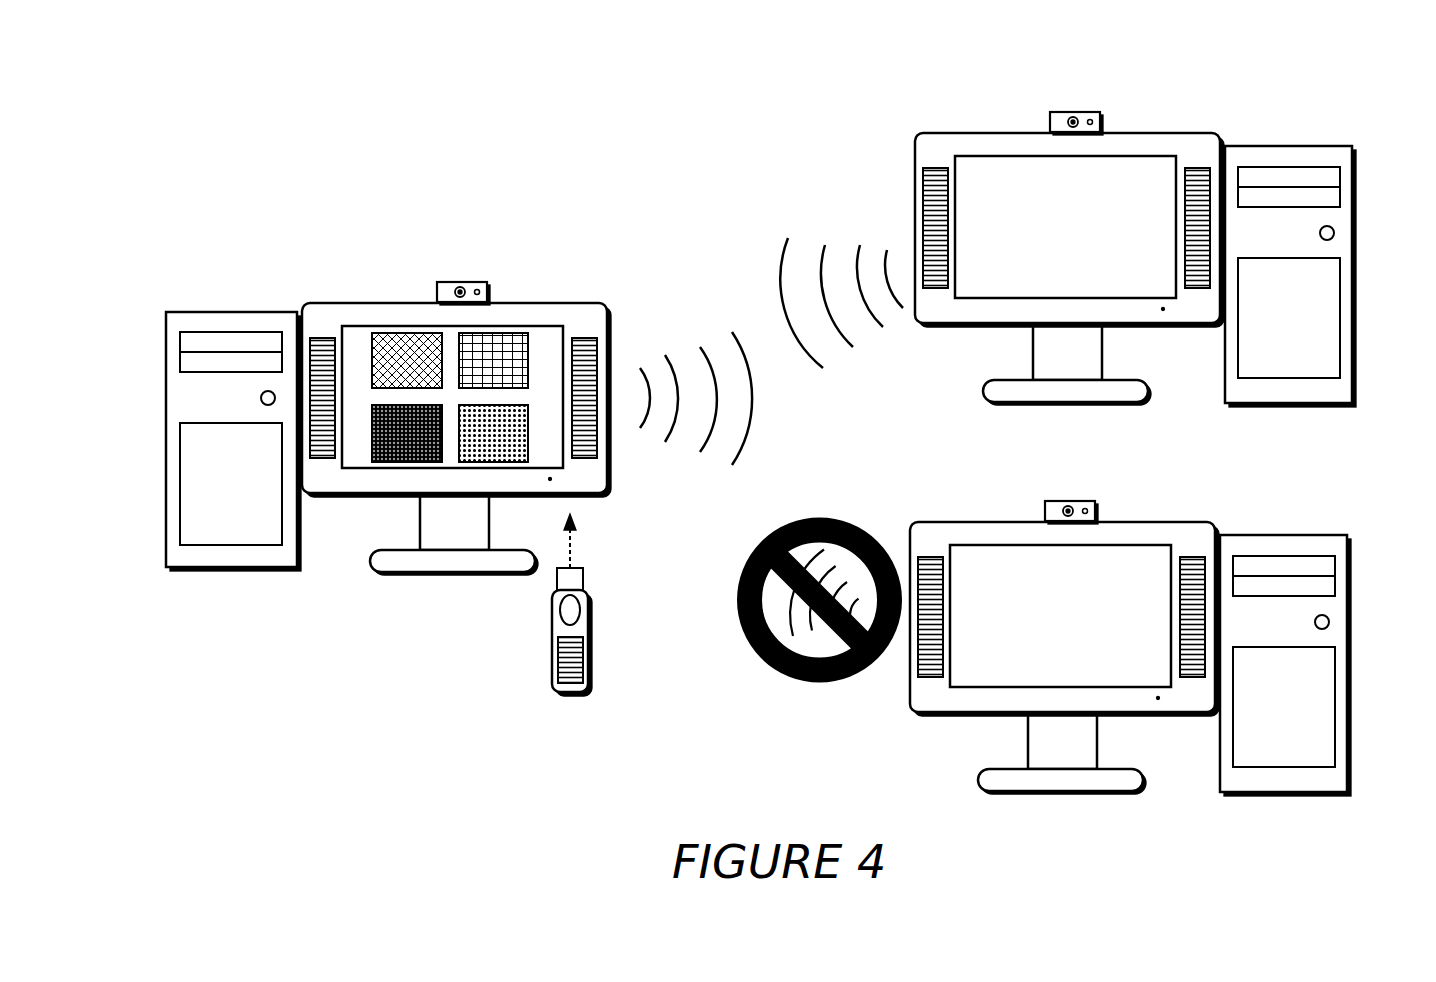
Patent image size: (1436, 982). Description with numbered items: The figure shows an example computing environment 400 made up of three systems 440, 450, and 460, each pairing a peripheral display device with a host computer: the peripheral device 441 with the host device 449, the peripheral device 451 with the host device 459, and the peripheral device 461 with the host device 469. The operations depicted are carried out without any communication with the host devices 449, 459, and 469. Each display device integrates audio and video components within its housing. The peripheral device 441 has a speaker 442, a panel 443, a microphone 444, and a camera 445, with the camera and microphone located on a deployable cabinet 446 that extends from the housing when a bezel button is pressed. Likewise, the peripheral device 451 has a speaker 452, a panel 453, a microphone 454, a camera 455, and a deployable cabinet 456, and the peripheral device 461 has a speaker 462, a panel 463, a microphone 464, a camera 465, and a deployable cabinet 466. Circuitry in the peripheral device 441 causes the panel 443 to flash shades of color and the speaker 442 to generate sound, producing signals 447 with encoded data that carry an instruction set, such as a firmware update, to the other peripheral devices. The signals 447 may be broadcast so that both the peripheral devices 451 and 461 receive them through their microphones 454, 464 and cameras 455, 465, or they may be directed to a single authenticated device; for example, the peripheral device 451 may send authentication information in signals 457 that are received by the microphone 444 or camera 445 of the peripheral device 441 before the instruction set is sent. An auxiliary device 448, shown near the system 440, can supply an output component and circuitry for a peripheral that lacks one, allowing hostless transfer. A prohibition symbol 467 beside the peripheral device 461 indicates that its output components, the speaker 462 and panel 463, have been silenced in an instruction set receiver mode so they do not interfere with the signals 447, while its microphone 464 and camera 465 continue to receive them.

The computing environment 400 is at (317, 128).
The system 440 is at (308, 227).
The peripheral device 441 is at (335, 305).
The speaker 442 is at (598, 340).
The panel 443 is at (527, 328).
The microphone 444 is at (478, 273).
The camera 445 is at (447, 273).
The deployable cabinet 446 is at (433, 287).
The signals 447 is at (687, 340).
The auxiliary device 448 is at (575, 693).
The host device 449 is at (229, 570).
The system 450 is at (1313, 105).
The peripheral device 451 is at (948, 133).
The speaker 452 is at (940, 167).
The panel 453 is at (1142, 155).
The microphone 454 is at (1098, 102).
The camera 455 is at (1068, 102).
The deployable cabinet 456 is at (1048, 113).
The signals 457 is at (812, 228).
The host device 459 is at (1314, 405).
The system 460 is at (898, 750).
The peripheral device 461 is at (943, 521).
The speaker 462 is at (930, 547).
The panel 463 is at (1139, 542).
The microphone 464 is at (1088, 492).
The camera 465 is at (1060, 492).
The deployable cabinet 466 is at (1045, 500).
The blocked wireless signal indicator 467 is at (757, 695).
The host device 469 is at (1300, 795).